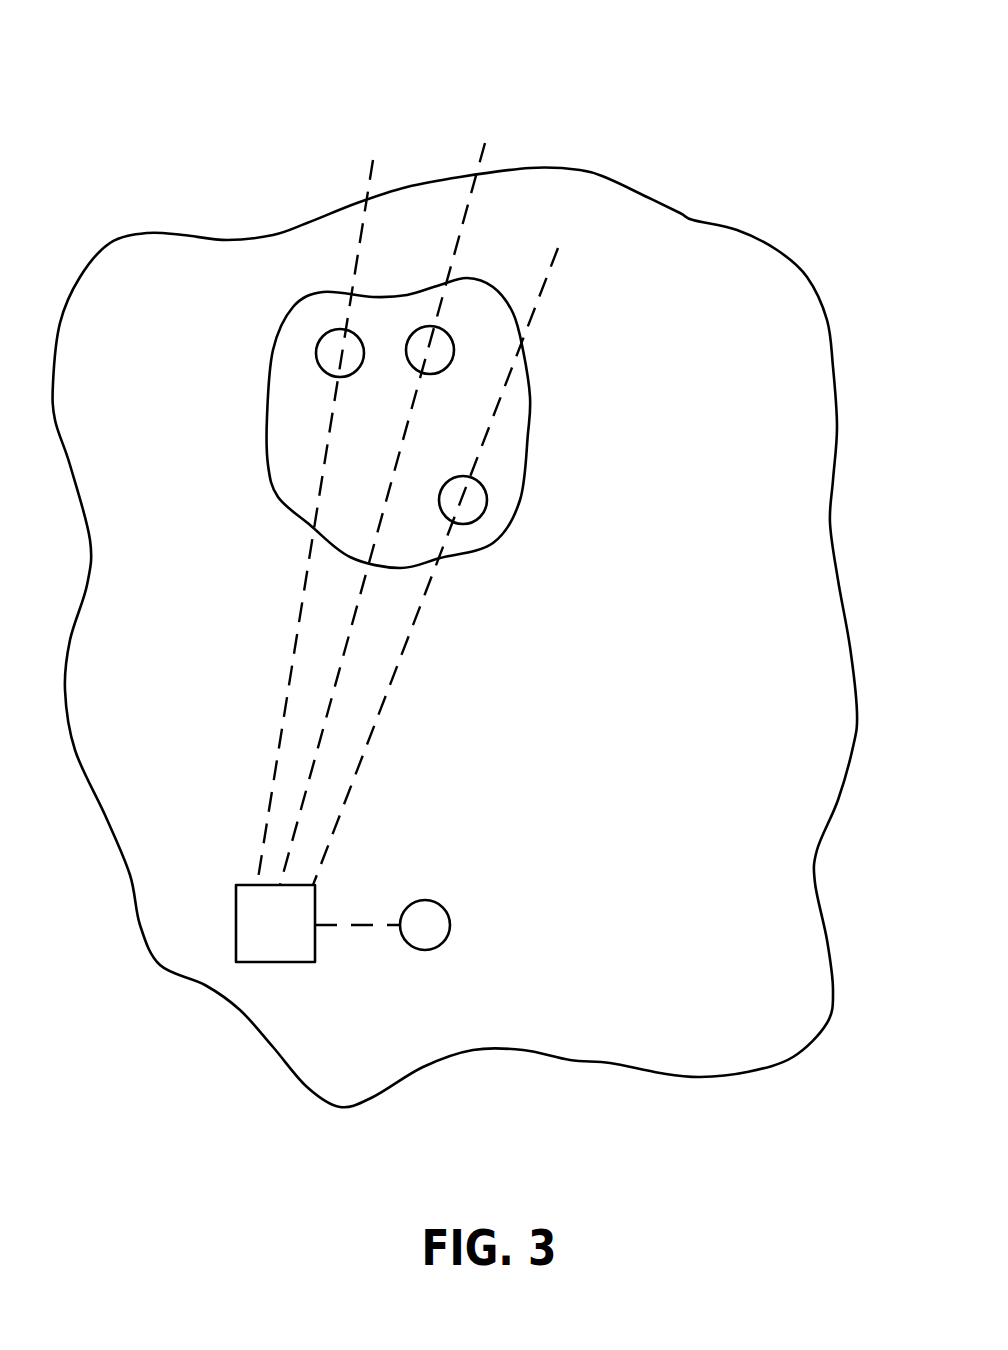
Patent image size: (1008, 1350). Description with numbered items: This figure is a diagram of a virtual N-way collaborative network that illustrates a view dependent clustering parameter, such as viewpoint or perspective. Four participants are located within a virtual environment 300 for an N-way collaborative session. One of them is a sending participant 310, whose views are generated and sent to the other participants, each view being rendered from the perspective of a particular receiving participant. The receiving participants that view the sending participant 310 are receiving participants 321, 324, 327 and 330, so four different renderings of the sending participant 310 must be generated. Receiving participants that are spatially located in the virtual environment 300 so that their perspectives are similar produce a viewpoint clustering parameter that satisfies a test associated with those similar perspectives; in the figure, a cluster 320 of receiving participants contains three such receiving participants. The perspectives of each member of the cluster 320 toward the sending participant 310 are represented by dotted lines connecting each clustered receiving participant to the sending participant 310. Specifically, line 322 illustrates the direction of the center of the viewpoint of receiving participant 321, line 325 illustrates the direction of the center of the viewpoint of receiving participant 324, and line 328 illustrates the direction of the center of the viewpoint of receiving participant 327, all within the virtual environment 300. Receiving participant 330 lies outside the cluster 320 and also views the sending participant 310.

The virtual environment 300 is at (512, 27).
The sending participant 310 is at (285, 963).
The cluster of receiving participants 320 is at (528, 433).
The receiving participant 321 is at (485, 510).
The line 322 is at (547, 282).
The receiving participant 324 is at (428, 326).
The line 325 is at (487, 145).
The receiving participant 327 is at (315, 353).
The line 328 is at (370, 165).
The receiving participant 330 is at (445, 942).